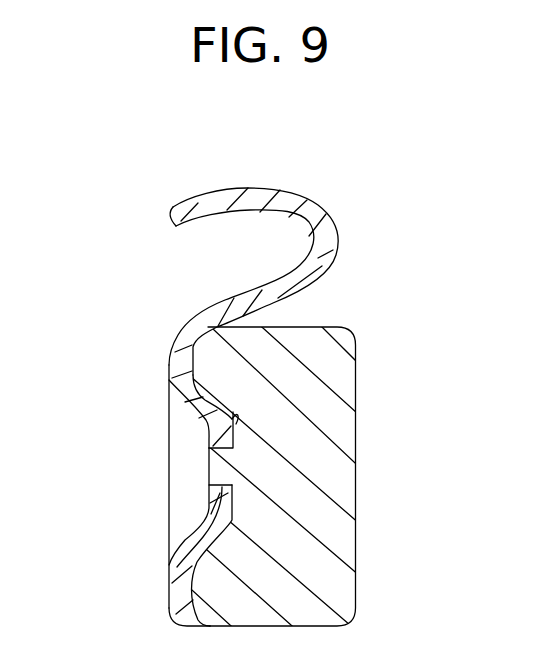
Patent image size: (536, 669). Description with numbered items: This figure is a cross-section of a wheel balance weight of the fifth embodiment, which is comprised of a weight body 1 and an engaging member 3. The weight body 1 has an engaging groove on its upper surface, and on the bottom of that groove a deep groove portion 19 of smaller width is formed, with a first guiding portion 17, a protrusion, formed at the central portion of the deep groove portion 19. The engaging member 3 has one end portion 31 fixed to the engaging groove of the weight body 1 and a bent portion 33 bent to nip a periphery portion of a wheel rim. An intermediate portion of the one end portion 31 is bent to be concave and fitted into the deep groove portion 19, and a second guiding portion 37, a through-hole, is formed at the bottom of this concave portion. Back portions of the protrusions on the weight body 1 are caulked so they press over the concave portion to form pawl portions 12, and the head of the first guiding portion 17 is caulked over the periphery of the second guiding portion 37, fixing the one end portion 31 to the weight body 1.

The weight body 1 is at (330, 357).
The engaging member 3 is at (202, 208).
The bent portion 33 is at (312, 221).
The one end portion 31 is at (183, 358).
The pawl portions 12 is at (188, 460).
The deep groove portion 19 is at (237, 410).
The first guiding portion 17 is at (222, 477).
The second guiding portion 37 is at (170, 566).